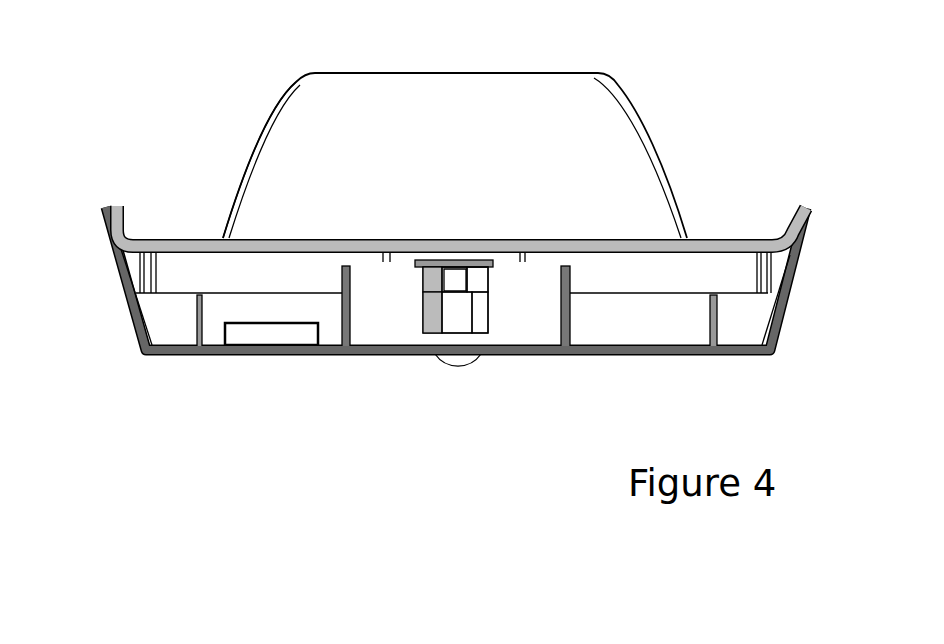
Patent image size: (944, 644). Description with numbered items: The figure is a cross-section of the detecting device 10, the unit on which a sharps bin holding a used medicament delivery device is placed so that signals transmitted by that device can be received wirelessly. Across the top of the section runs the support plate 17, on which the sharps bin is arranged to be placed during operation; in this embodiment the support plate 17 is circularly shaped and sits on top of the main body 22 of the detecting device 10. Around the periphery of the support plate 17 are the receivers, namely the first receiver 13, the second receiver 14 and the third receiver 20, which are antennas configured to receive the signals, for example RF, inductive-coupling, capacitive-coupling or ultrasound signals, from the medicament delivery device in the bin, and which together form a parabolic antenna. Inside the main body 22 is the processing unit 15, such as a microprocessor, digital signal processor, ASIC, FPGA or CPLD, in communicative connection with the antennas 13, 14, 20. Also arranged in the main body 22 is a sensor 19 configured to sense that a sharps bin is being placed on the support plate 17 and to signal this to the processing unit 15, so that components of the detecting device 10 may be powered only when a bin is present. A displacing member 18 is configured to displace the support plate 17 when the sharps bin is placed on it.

The detecting device 10 is at (605, 63).
The receiver 13 is at (306, 90).
The receiver 14 is at (798, 218).
The processing unit 15 is at (266, 340).
The support plate 17 is at (722, 249).
The displacing member 18 is at (441, 323).
The sensor 19 is at (470, 292).
The third receiver 20 is at (108, 233).
The main body 22 is at (658, 338).